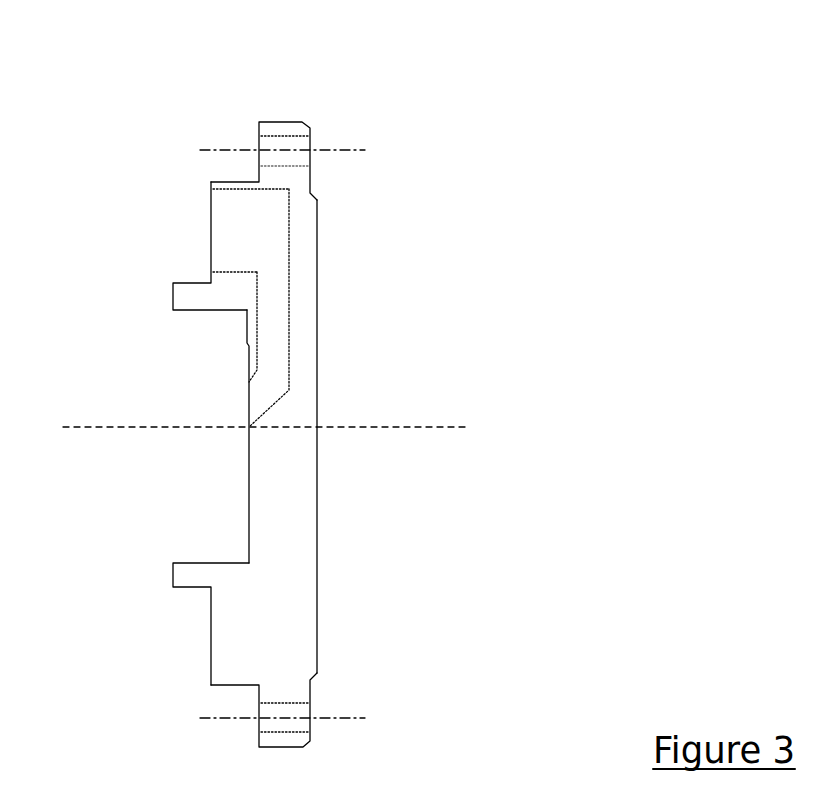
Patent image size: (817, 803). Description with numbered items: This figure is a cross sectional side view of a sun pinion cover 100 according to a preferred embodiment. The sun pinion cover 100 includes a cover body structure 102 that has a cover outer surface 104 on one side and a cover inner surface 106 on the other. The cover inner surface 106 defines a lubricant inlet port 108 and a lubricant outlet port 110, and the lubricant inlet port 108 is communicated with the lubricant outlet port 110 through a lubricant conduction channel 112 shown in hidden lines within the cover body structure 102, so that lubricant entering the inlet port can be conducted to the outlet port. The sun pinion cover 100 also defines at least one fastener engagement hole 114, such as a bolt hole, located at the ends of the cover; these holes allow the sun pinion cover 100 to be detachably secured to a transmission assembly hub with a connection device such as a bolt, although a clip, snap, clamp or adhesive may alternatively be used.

The sun pinion cover 100 is at (580, 78).
The cover body structure 102 is at (291, 122).
The cover outer surface 104 is at (317, 275).
The cover inner surface 106 is at (248, 488).
The lubricant inlet port 108 is at (222, 222).
The lubricant outlet port 110 is at (262, 387).
The lubricant conduction channel 112 is at (289, 343).
The fastener engagement hole 114 is at (310, 140).